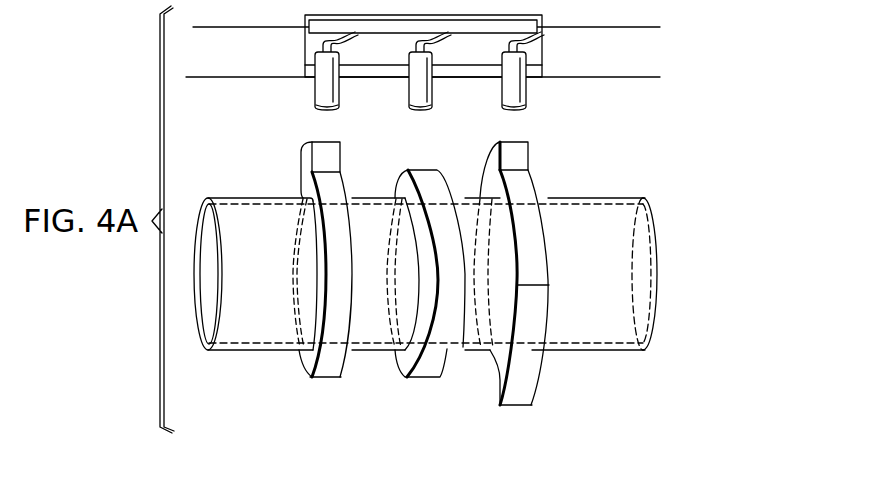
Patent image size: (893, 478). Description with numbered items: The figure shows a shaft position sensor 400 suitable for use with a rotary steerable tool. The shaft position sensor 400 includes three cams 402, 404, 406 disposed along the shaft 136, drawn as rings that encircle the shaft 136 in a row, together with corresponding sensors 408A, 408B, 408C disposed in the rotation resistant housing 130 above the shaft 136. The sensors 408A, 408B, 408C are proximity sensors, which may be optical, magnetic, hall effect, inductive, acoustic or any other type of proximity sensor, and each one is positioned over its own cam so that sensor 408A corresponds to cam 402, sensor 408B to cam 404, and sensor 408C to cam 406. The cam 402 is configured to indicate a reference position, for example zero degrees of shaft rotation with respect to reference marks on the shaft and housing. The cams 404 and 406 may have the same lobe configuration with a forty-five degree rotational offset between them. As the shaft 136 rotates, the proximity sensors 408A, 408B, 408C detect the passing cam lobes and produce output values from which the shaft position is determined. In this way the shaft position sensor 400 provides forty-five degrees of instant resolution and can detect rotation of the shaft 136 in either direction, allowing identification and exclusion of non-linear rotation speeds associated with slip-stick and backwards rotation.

The rotation resistant housing 130 is at (650, 44).
The shaft 136 is at (618, 198).
The shaft position sensor 400 is at (472, 284).
The cam 402 is at (326, 380).
The cam 404 is at (423, 379).
The cam 406 is at (548, 365).
The sensor 408A is at (315, 93).
The sensor 408B is at (408, 93).
The sensor 408C is at (527, 93).